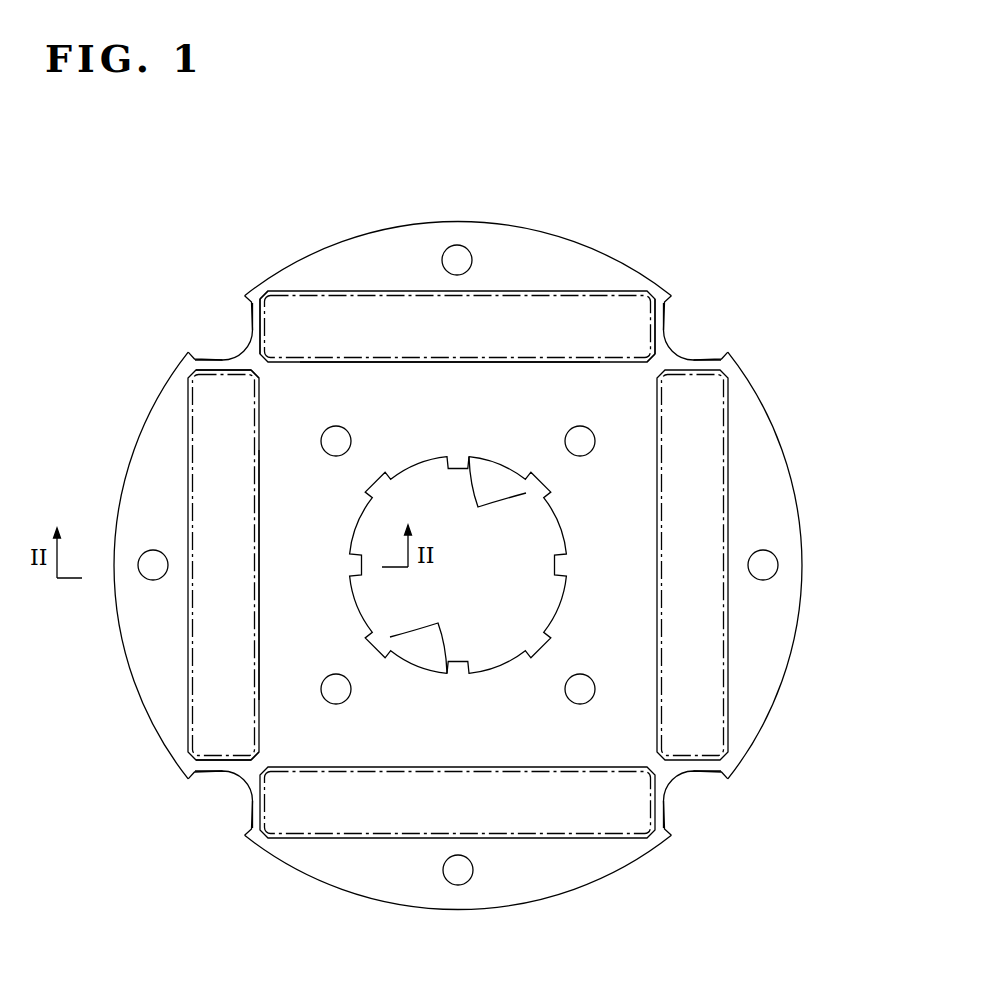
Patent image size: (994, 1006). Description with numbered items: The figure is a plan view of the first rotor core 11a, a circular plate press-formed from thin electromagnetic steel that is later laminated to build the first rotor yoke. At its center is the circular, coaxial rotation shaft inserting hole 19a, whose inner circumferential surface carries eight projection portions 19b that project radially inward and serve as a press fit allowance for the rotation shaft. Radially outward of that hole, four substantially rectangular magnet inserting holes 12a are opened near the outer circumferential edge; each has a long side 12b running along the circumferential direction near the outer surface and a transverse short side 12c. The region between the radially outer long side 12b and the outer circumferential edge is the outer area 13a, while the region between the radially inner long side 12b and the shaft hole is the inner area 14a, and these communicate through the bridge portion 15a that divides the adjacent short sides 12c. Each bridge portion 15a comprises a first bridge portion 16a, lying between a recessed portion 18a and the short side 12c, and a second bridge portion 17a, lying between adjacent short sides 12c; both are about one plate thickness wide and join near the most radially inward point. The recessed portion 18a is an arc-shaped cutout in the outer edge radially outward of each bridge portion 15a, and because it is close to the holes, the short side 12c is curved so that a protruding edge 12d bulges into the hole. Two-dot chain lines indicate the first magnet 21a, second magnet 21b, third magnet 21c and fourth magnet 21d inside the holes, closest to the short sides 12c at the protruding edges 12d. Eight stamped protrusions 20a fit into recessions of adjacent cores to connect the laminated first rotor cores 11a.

The first rotor core 11a is at (220, 213).
The magnet inserting hole 12a is at (478, 343).
The long side 12b is at (460, 352).
The short side 12c is at (256, 303).
The protruding edge 12d is at (268, 322).
The outer area 13a is at (368, 243).
The inner area 14a is at (638, 672).
The bridge portion 15a is at (137, 302).
The first bridge portion 16a is at (252, 340).
The second bridge portion 17a is at (237, 348).
The recessed portion 18a is at (203, 344).
The rotation shaft inserting hole 19a is at (484, 588).
The projection portion 19b is at (478, 507).
The protrusion 20a is at (458, 247).
The first magnet 21a is at (258, 523).
The second magnet 21b is at (553, 291).
The third magnet 21c is at (733, 475).
The fourth magnet 21d is at (560, 840).